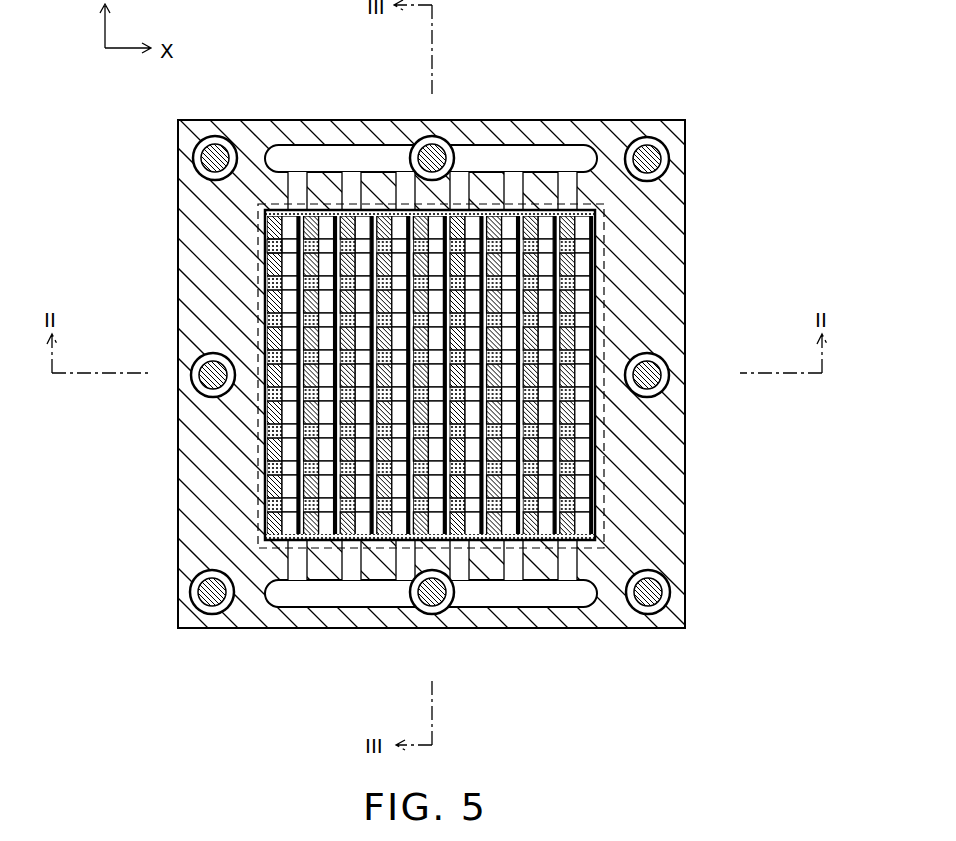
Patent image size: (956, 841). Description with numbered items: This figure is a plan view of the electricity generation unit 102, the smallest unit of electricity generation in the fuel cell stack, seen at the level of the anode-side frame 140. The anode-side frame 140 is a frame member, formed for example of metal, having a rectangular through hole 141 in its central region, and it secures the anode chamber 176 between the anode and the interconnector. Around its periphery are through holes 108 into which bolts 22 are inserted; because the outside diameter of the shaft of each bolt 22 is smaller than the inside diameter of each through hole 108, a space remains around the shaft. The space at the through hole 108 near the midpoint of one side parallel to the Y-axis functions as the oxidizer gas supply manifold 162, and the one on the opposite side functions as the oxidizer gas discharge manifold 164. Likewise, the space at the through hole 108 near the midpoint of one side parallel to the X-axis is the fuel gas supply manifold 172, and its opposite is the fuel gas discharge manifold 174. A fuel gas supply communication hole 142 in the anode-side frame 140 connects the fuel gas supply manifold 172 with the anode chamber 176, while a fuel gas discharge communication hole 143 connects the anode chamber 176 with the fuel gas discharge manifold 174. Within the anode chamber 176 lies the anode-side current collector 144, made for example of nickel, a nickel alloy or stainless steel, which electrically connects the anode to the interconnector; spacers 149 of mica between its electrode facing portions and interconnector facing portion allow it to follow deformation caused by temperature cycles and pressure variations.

The electricity generation unit 102 is at (478, 374).
The through hole 108 is at (435, 366).
The fuel gas supply manifold 172 is at (438, 137).
The fuel gas discharge manifold 174 is at (428, 613).
The oxidizer gas discharge manifold 164 is at (196, 367).
The oxidizer gas supply manifold 162 is at (664, 366).
The bolt 22 is at (203, 152).
The anode-side frame 140 is at (197, 248).
The through hole 141 is at (354, 376).
The fuel gas supply communication hole 142 is at (316, 144).
The fuel gas discharge communication hole 143 is at (349, 567).
The anode-side current collector 144 is at (265, 531).
The spacer 149 is at (265, 510).
The anode chamber 176 is at (292, 503).